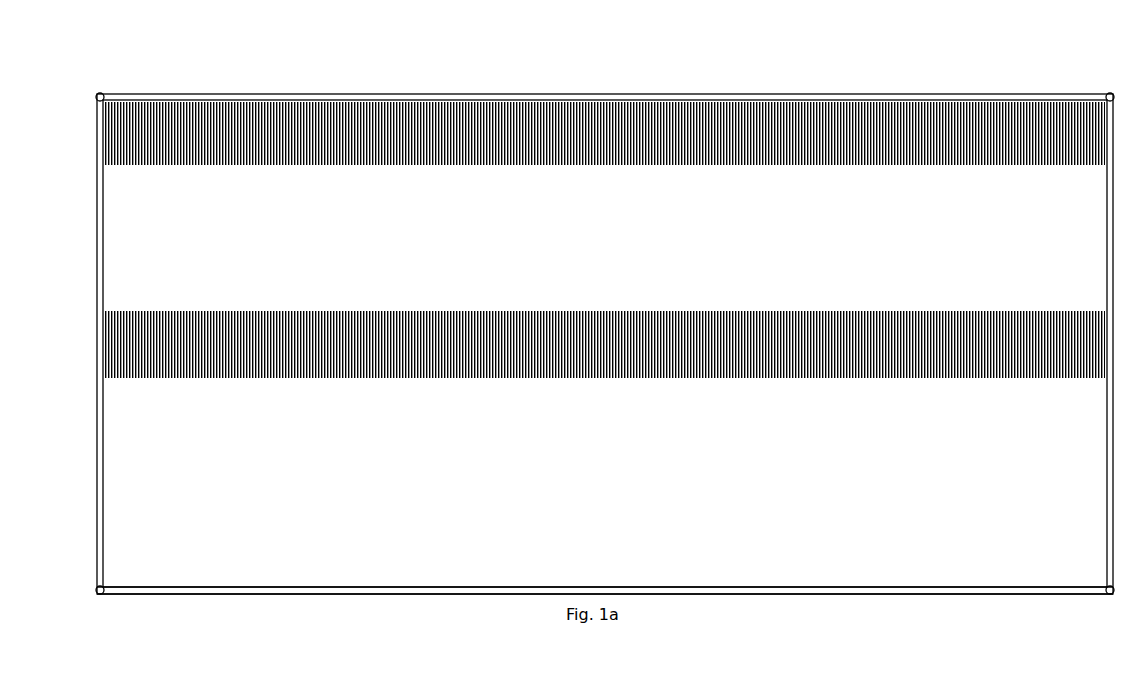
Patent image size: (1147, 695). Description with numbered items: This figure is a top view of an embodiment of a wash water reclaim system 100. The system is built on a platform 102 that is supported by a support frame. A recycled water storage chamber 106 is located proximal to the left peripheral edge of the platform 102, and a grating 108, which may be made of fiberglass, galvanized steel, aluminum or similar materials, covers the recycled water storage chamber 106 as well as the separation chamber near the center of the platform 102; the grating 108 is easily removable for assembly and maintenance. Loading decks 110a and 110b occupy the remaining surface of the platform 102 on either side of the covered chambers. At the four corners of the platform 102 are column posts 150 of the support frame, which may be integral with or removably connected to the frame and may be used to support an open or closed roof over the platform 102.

The wash water reclaim system 100 is at (279, 630).
The platform 102 is at (451, 586).
The recycled water storage chamber 106 is at (500, 92).
The grating 108 is at (780, 370).
The loading deck 110a is at (498, 241).
The loading deck 110b is at (490, 452).
The column post 150 is at (95, 86).